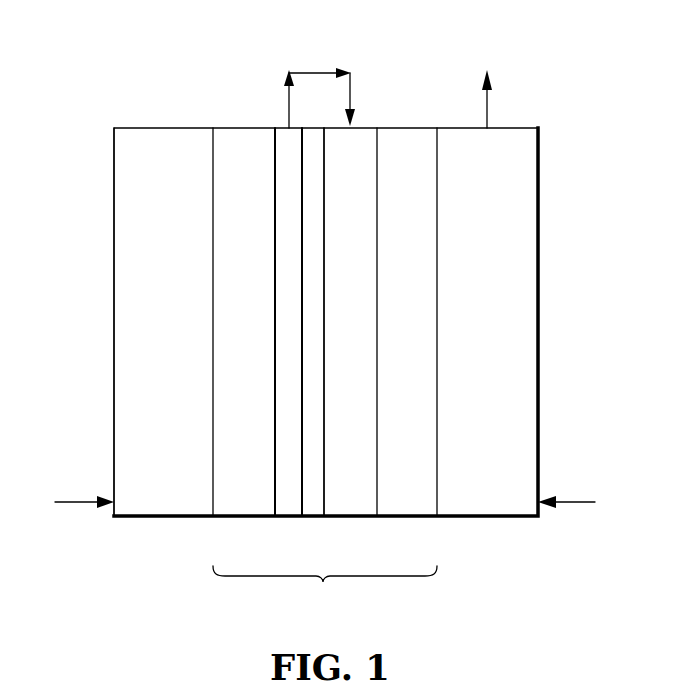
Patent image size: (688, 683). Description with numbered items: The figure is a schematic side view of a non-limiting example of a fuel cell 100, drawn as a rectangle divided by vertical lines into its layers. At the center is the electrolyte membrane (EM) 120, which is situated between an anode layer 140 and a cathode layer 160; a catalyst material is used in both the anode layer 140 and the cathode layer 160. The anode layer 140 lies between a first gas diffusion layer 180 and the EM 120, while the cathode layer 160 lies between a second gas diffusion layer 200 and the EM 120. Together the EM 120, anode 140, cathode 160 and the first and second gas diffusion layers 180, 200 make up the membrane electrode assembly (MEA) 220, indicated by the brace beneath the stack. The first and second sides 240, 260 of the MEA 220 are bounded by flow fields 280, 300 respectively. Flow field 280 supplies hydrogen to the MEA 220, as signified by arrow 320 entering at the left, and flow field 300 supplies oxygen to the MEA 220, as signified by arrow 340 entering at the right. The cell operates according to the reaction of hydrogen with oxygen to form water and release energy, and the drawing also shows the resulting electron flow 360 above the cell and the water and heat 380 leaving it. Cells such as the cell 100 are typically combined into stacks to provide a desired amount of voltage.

The fuel cell 100 is at (597, 261).
The electrolyte membrane 120 is at (303, 128).
The anode layer 140 is at (290, 517).
The cathode layer 160 is at (350, 517).
The first gas diffusion layer 180 is at (243, 128).
The second gas diffusion layer 200 is at (410, 128).
The membrane electrode assembly 220 is at (325, 591).
The first side of the membrane electrode assembly 240 is at (213, 128).
The second side of the membrane electrode assembly 260 is at (438, 128).
The flow field 280 is at (148, 128).
The flow field 300 is at (522, 128).
The arrow 320 is at (78, 502).
The arrow 340 is at (575, 502).
The external electron circuit 360 is at (288, 112).
The water and heat outlet 380 is at (489, 118).